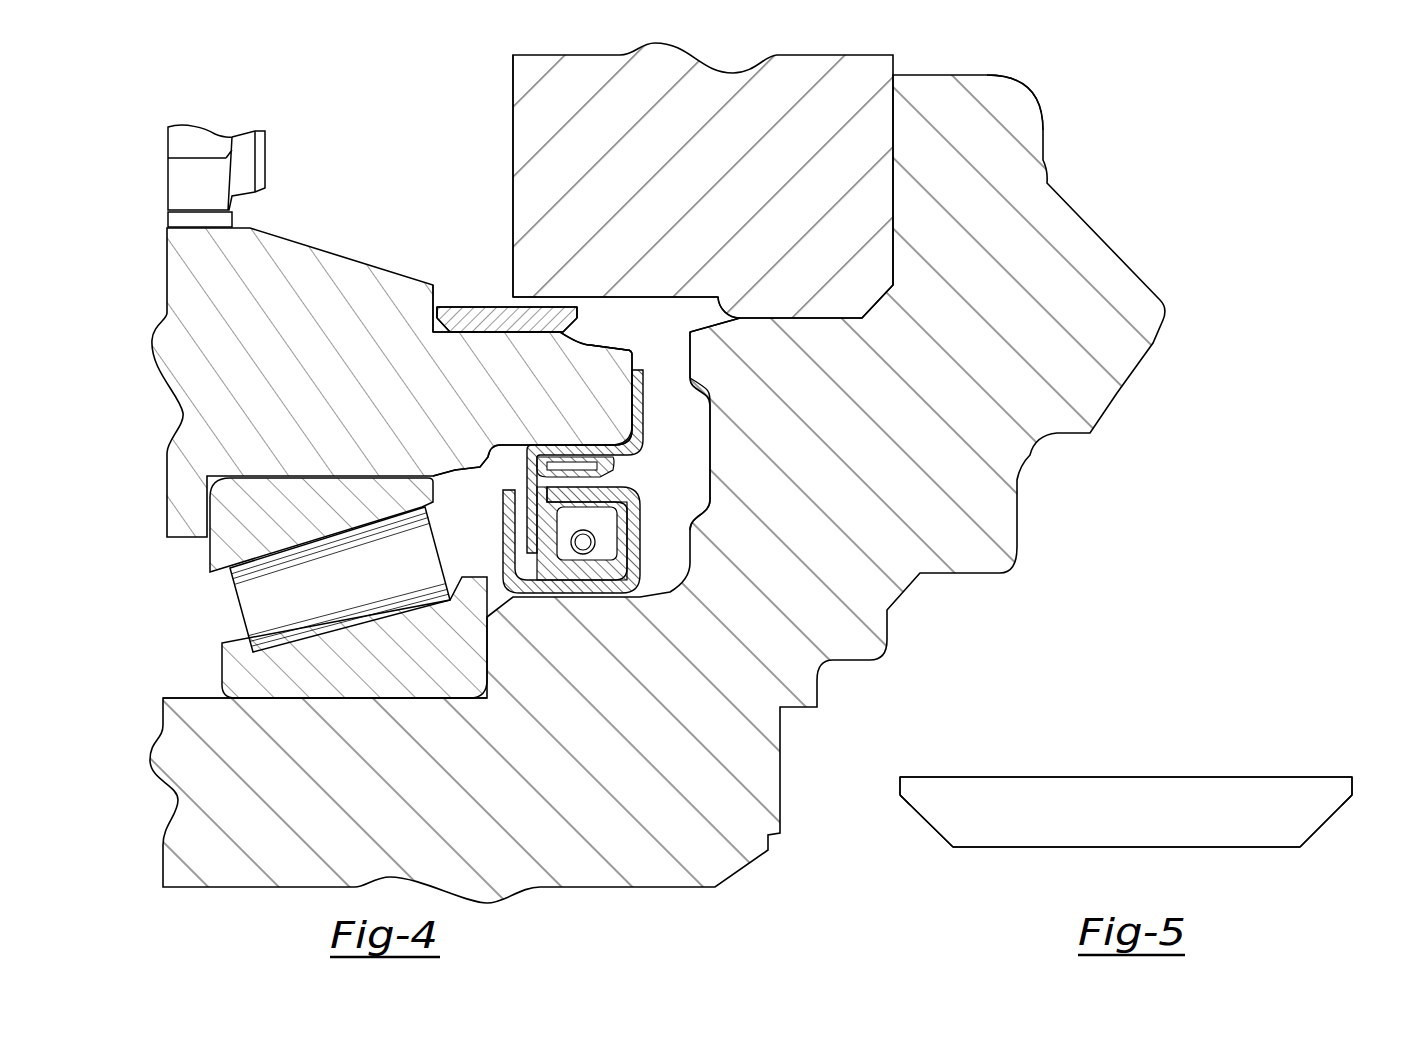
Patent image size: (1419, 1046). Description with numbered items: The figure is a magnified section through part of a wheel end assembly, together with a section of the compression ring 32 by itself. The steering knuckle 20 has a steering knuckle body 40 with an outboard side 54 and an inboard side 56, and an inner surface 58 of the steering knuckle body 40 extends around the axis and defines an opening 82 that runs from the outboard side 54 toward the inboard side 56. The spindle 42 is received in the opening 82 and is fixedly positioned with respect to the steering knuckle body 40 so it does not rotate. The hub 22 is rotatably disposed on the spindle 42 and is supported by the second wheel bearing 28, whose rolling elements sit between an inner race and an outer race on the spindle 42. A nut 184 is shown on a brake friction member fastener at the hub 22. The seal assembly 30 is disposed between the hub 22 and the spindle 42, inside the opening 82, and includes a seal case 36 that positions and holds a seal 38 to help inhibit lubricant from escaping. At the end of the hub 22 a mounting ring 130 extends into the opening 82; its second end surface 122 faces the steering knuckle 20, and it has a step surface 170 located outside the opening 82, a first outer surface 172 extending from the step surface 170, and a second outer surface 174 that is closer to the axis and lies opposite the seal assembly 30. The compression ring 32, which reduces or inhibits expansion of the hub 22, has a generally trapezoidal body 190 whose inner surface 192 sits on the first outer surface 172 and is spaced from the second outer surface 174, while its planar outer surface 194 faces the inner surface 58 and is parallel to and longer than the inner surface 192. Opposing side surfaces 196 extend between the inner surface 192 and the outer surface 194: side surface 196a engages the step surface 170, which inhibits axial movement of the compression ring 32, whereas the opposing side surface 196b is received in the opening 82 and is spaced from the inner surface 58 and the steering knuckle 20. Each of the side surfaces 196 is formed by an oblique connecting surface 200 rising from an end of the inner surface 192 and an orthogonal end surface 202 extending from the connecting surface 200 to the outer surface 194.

In FIG. 4, the steering knuckle 20 is at (703, 180).
In FIG. 4, the steering knuckle body 40 is at (677, 152).
In FIG. 4, the hub 22 is at (215, 402).
In FIG. 4, the second wheel bearing 28 is at (220, 670).
In FIG. 4, the seal assembly 30 is at (688, 491).
In FIG. 4, the compression ring 32 is at (480, 332).
In FIG. 5, the compression ring 32 is at (1126, 764).
In FIG. 4, the seal case 36 is at (641, 445).
In FIG. 4, the seal 38 is at (630, 575).
In FIG. 4, the spindle 42 is at (1092, 211).
In FIG. 4, the outboard side 54 is at (513, 135).
In FIG. 4, the inboard side 56 is at (893, 148).
In FIG. 4, the inner surface 58 is at (548, 297).
In FIG. 4, the opening 82 is at (688, 305).
In FIG. 4, the second end surface 122 is at (640, 357).
In FIG. 4, the mounting ring 130 is at (527, 392).
In FIG. 4, the step surface 170 is at (441, 298).
In FIG. 4, the first outer surface 172 is at (538, 332).
In FIG. 4, the second outer surface 174 is at (590, 345).
In FIG. 4, the nut 184 is at (240, 200).
In FIG. 4, the body 190 is at (507, 320).
In FIG. 5, the body 190 is at (1153, 822).
In FIG. 4, the inner surface 192 is at (530, 333).
In FIG. 5, the inner surface 192 is at (995, 847).
In FIG. 4, the outer surface 194 is at (482, 305).
In FIG. 5, the outer surface 194 is at (1082, 777).
In FIG. 5, the opposing side surfaces 196 is at (903, 800).
In FIG. 4, the side surface 196a is at (437, 318).
In FIG. 4, the opposing side surface 196b is at (580, 320).
In FIG. 4, the connecting surface 200 is at (580, 322).
In FIG. 5, the connecting surface 200 is at (930, 825).
In FIG. 4, the end surface 202 is at (437, 307).
In FIG. 5, the end surface 202 is at (900, 790).